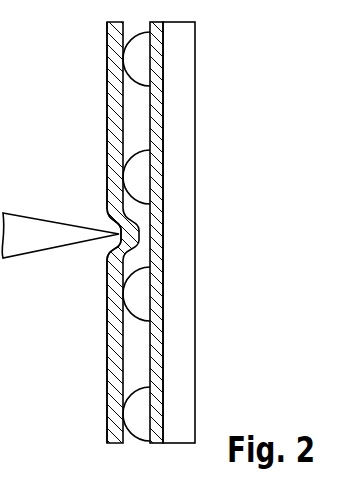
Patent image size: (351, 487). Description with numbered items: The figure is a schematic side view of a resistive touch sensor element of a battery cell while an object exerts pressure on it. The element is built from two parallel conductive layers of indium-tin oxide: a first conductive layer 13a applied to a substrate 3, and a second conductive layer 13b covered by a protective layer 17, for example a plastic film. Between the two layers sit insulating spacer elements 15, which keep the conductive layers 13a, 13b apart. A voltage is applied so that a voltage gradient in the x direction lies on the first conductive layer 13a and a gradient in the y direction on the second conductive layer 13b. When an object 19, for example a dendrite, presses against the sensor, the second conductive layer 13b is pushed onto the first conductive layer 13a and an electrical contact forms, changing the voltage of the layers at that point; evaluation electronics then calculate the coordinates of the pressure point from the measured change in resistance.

The substrate 3 is at (178, 180).
The first conductive layer 13a is at (155, 53).
The second conductive layer 13b is at (108, 61).
The insulating spacer elements 15 is at (140, 65).
The protective layer 17 is at (108, 118).
The object 19 is at (47, 239).